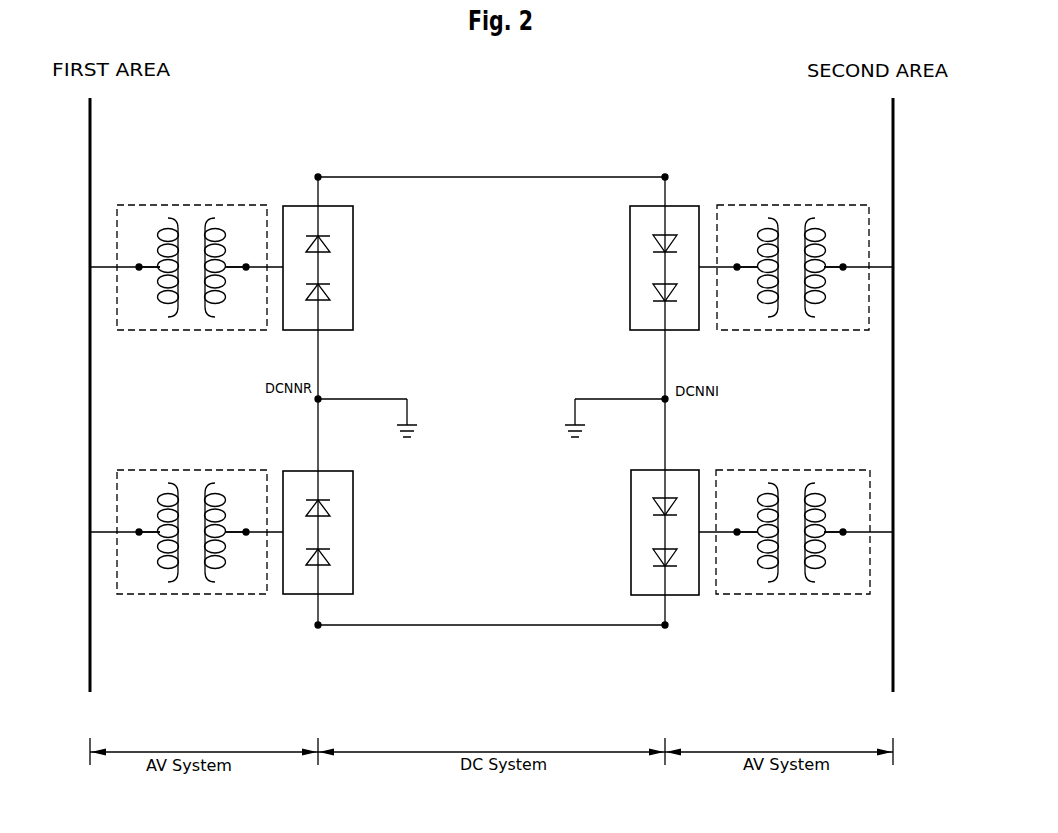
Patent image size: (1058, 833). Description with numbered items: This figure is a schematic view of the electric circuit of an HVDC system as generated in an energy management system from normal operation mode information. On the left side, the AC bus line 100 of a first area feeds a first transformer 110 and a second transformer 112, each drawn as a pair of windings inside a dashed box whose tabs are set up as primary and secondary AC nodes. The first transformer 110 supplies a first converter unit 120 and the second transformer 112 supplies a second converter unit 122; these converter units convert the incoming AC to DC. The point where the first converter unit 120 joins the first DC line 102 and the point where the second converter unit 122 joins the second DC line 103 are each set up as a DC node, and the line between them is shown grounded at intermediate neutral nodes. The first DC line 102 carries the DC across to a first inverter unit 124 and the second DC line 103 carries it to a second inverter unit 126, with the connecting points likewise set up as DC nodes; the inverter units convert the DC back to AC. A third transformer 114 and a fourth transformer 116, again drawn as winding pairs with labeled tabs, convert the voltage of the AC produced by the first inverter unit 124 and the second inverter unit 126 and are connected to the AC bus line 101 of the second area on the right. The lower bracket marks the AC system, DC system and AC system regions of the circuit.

The AC bus line of a first area 100 is at (91, 152).
The AC bus line of a second area 101 is at (892, 123).
The first DC line 102 is at (442, 178).
The second DC line 103 is at (573, 626).
The first transformer 110 is at (208, 204).
The second transformer 112 is at (203, 469).
The third transformer 114 is at (815, 204).
The fourth transformer 116 is at (813, 469).
The first converter unit 120 is at (354, 240).
The second converter unit 122 is at (354, 512).
The first inverter unit 124 is at (629, 233).
The second inverter unit 126 is at (630, 511).